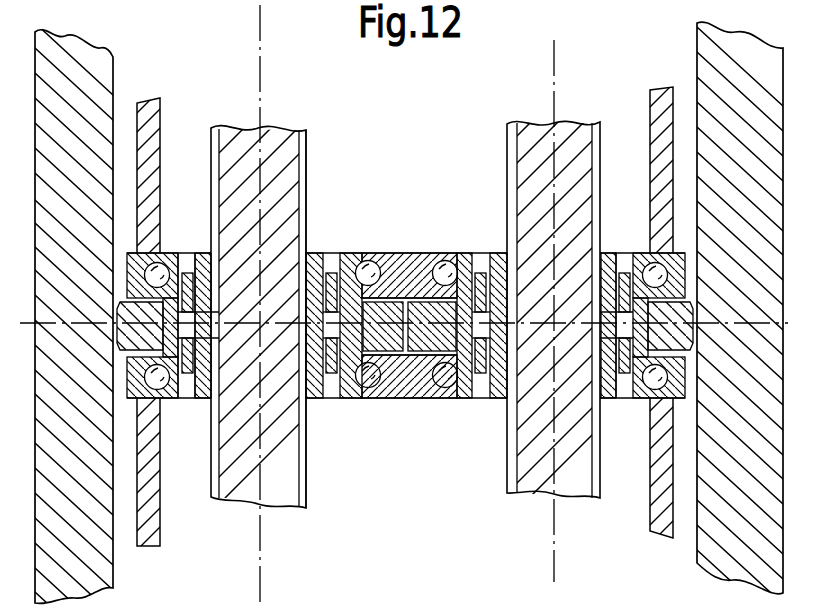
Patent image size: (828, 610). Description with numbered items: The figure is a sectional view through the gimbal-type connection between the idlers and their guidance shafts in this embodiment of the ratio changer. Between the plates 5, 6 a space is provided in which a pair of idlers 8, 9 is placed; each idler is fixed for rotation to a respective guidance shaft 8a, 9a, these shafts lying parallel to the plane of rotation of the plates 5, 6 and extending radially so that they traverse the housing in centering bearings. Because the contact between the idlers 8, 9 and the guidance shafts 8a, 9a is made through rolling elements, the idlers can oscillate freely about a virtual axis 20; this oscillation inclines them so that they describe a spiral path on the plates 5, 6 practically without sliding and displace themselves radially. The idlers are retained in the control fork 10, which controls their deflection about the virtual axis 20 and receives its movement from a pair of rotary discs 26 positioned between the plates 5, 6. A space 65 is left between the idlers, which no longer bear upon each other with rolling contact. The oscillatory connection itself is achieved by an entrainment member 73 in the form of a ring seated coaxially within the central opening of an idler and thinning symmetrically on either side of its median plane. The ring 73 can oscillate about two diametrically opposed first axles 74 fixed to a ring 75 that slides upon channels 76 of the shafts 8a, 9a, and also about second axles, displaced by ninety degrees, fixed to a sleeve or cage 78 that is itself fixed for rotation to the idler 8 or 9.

The plate 5 is at (92, 557).
The plate 6 is at (716, 547).
The idler 8 is at (390, 253).
The guidance shaft 8a is at (270, 128).
The idler 9 is at (418, 253).
The guidance shaft 9a is at (573, 142).
The control fork 10 is at (392, 253).
The virtual axis 20 is at (718, 320).
The rotary disc 26 is at (155, 513).
The space 65 is at (404, 399).
The entrainment member 73 is at (188, 399).
The first axles 74 is at (330, 399).
The ring 75 is at (310, 253).
The channels 76 is at (300, 172).
The sleeve or cage 78 is at (350, 399).